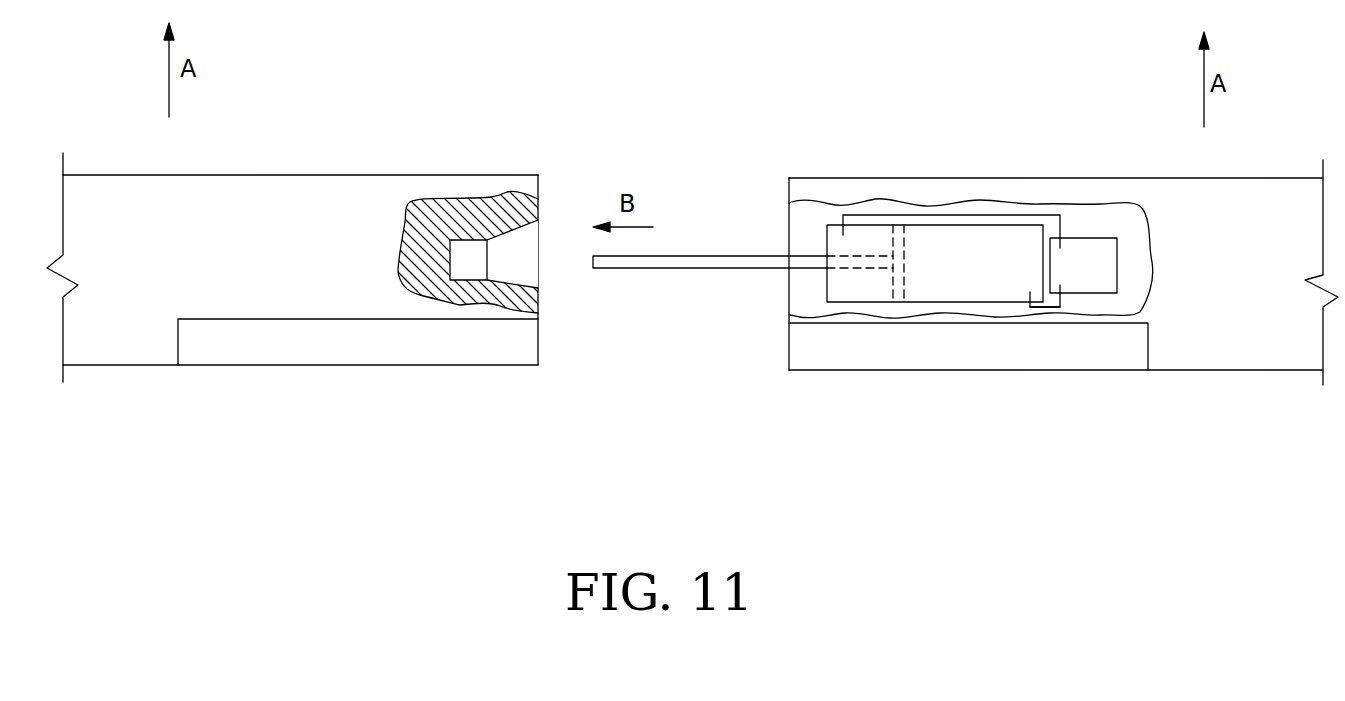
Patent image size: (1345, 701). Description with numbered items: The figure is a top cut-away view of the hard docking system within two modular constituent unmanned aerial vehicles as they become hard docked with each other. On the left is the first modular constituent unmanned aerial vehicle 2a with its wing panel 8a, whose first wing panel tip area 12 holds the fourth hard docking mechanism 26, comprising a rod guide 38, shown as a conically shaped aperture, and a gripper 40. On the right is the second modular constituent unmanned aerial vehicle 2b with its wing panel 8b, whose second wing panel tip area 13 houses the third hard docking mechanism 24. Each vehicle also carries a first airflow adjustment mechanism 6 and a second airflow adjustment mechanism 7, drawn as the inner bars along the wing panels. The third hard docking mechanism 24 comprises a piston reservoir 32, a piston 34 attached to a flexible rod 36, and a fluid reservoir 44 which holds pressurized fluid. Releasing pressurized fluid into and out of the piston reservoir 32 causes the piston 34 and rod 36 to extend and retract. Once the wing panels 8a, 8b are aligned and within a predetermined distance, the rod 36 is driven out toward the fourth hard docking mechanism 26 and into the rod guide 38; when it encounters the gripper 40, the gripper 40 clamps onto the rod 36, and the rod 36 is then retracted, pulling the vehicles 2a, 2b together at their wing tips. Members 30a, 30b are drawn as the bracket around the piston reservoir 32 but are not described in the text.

The first modular constituent unmanned aerial vehicle 2a is at (192, 383).
The second modular constituent unmanned aerial vehicle 2b is at (982, 392).
The first airflow adjustment mechanism 6 is at (348, 356).
The second airflow adjustment mechanism 7 is at (980, 364).
The wing panel 8a is at (222, 271).
The wing panel 8b is at (1264, 314).
The first wing panel tip area 12 is at (393, 214).
The second wing panel tip area 13 is at (840, 178).
The third hard docking mechanism 24 is at (842, 348).
The fourth hard docking mechanism 26 is at (436, 259).
The actuating element 30a is at (1063, 307).
The actuating element 30b is at (960, 215).
The piston reservoir 32 is at (1010, 276).
The piston 34 is at (905, 262).
The flexible rod 36 is at (688, 262).
The rod guide 38 is at (510, 288).
The gripper 40 is at (452, 240).
The fluid reservoir 44 is at (1117, 264).